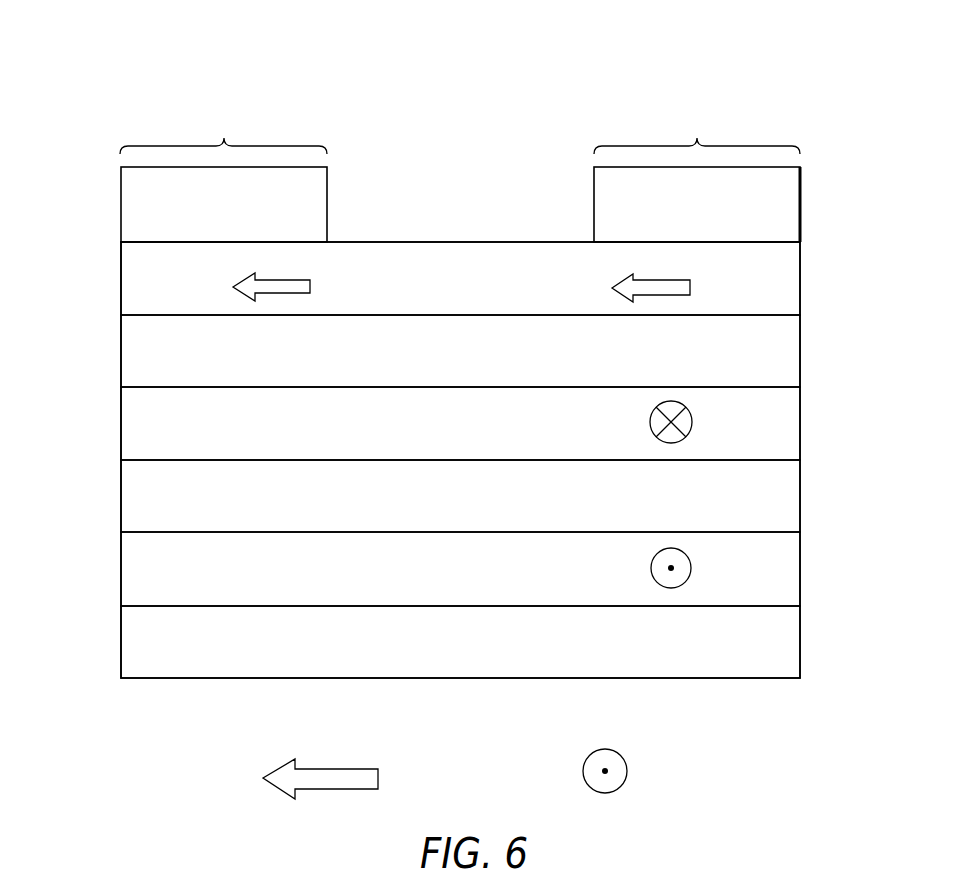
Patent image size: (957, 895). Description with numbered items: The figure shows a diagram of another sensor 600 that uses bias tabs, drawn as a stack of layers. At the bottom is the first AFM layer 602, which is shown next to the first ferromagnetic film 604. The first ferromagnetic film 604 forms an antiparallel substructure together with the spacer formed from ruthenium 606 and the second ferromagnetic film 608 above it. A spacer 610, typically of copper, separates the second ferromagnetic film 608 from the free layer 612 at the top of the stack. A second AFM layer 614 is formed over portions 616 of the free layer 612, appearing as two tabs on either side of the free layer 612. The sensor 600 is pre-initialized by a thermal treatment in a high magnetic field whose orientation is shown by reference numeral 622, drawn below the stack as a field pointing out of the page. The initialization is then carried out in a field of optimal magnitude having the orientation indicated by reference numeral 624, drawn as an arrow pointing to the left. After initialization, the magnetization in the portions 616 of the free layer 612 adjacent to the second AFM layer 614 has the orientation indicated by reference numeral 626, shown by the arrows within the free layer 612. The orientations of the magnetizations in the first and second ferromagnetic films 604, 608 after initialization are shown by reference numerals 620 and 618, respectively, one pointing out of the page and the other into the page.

The sensor 600 is at (586, 89).
The first AFM layer 602 is at (121, 642).
The first ferromagnetic film 604 is at (121, 578).
The spacer formed from ruthenium 606 is at (121, 507).
The second ferromagnetic film 608 is at (121, 433).
The spacer 610 is at (121, 343).
The free layer 612 is at (121, 278).
The second AFM layer 614 is at (121, 203).
The portions of the free layer 616 is at (460, 130).
The magnetization orientation of the second ferromagnetic film 618 is at (650, 422).
The magnetization orientation of the first ferromagnetic film 620 is at (651, 568).
The high magnetic field orientation 622 is at (589, 755).
The initialization field orientation 624 is at (333, 768).
The free layer magnetization orientation 626 is at (288, 280).